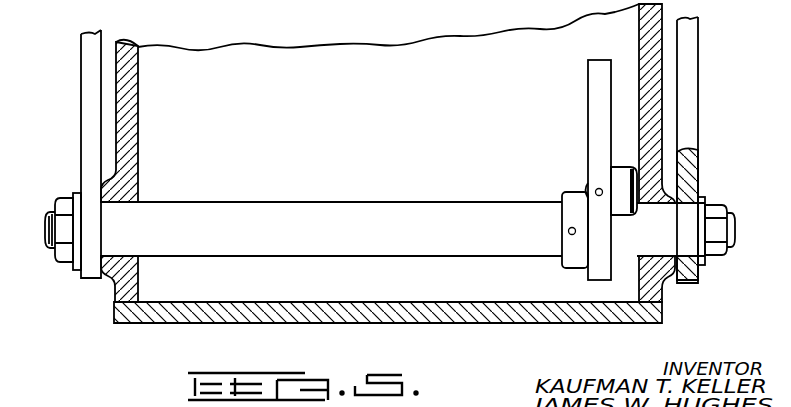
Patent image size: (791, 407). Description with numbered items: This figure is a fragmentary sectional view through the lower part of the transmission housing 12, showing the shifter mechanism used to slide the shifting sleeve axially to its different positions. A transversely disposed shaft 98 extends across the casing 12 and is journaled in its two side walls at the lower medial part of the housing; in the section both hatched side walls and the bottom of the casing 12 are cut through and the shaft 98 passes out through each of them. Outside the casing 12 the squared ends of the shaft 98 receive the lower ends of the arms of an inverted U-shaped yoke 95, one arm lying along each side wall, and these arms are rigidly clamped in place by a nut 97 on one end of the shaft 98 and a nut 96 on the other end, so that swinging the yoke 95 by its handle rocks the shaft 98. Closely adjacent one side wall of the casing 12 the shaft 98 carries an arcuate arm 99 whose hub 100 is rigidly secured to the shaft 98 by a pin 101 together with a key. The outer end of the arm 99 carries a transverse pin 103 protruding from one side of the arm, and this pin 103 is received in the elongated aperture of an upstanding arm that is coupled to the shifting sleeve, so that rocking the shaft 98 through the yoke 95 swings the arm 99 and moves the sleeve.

The transmission housing 12 is at (139, 125).
The yoke 95 is at (93, 60).
The nut 96 is at (711, 207).
The nut 97 is at (69, 195).
The shaft 98 is at (382, 220).
The arcuate arm 99 is at (590, 96).
The hub 100 is at (586, 195).
The pin 101 is at (568, 234).
The transverse pin 103 is at (621, 166).